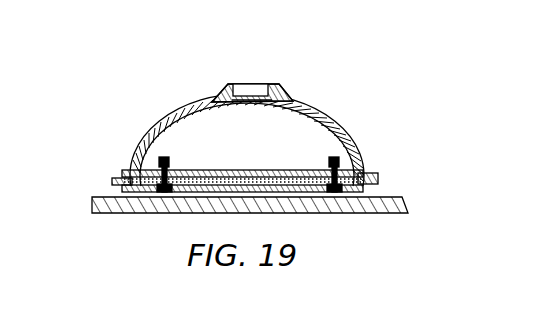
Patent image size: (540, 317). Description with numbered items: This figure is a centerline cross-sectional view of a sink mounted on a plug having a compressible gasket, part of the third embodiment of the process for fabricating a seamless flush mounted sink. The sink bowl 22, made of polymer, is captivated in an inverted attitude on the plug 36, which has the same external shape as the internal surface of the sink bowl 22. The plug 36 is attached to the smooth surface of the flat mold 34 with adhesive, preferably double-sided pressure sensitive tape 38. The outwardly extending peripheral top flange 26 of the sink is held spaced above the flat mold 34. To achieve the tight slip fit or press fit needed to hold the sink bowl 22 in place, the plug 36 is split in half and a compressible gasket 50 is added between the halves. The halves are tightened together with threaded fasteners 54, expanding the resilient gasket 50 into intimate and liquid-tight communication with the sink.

The sink bowl 22 is at (197, 105).
The peripheral top flange 26 is at (128, 183).
The flat mold 34 is at (152, 210).
The plug 36 is at (299, 170).
The double-sided pressure sensitive tape 38 is at (183, 210).
The compressible gasket 50 is at (120, 209).
The threaded fasteners 54 is at (164, 157).